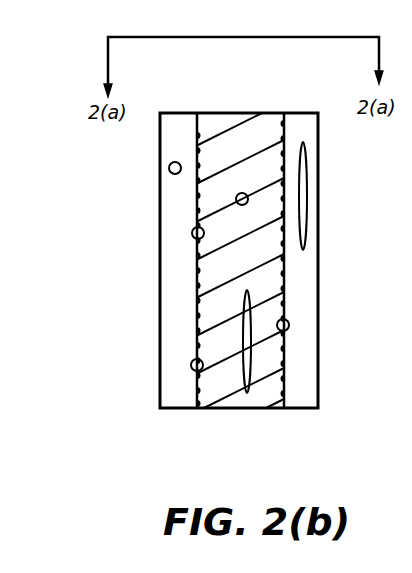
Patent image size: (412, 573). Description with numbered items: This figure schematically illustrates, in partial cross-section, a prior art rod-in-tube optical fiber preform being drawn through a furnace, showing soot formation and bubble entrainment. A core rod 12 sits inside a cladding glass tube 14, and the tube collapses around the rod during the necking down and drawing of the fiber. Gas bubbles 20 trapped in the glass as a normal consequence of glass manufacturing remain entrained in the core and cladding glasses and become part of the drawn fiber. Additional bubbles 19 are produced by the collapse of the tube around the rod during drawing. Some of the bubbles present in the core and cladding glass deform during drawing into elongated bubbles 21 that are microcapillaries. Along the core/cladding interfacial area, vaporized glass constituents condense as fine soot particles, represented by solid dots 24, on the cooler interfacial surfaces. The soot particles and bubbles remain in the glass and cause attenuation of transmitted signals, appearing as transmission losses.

The core rod 12 is at (268, 410).
The cladding glass tube 14 is at (318, 368).
The additional bubbles 19 is at (193, 238).
The gas bubbles 20 is at (168, 168).
The elongated voids 21 is at (250, 291).
The soot 24 is at (282, 143).